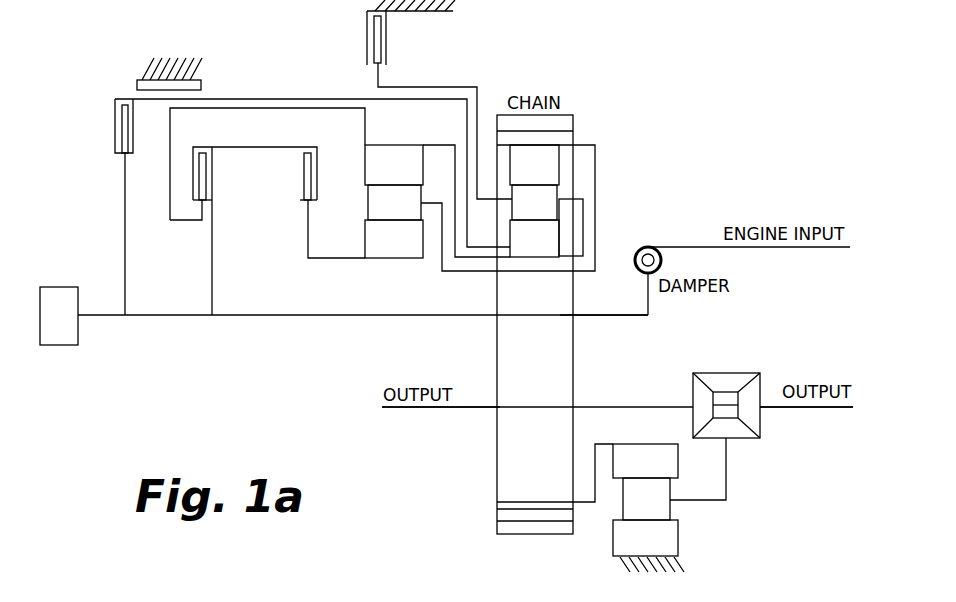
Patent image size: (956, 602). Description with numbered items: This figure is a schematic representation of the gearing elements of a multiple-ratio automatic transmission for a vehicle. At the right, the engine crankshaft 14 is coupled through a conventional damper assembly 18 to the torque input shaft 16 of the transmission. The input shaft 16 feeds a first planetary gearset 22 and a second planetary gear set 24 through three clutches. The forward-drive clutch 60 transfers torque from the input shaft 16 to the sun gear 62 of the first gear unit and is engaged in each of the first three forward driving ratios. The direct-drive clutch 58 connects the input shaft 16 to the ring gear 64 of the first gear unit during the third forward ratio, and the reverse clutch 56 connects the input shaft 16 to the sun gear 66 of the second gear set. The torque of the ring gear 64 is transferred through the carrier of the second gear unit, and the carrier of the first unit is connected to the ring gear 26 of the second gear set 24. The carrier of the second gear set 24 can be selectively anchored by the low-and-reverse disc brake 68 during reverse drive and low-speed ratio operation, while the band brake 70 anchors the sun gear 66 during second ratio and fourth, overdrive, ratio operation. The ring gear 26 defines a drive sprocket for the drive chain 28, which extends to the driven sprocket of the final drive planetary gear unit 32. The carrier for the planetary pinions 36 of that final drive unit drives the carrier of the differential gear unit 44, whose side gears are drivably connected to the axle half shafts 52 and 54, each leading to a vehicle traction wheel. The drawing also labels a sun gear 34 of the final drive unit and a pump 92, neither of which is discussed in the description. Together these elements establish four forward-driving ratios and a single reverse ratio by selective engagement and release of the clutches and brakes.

The crankshaft 14 is at (688, 247).
The torque input shaft 16 is at (597, 318).
The damper assembly 18 is at (648, 247).
The first planetary gearset 22 is at (367, 207).
The second planetary gear set 24 is at (559, 193).
The ring gear 26 is at (553, 155).
The drive chain 28 is at (505, 123).
The final drive planetary gear unit 32 is at (670, 512).
The third sun gear 34 is at (640, 443).
The planetary pinions 36 is at (627, 510).
The differential gear unit 44 is at (734, 373).
The axle half shaft 52 is at (800, 408).
The axle half shaft 54 is at (415, 410).
The reverse clutch 56 is at (118, 112).
The direct-drive clutch 58 is at (206, 173).
The forward-drive clutch 60 is at (303, 190).
The sun gear 62 is at (393, 262).
The ring gear 64 is at (363, 172).
The sun gear 66 is at (560, 240).
The low-and-reverse disc brake 68 is at (381, 53).
The brake 70 is at (135, 85).
The pump 92 is at (62, 287).